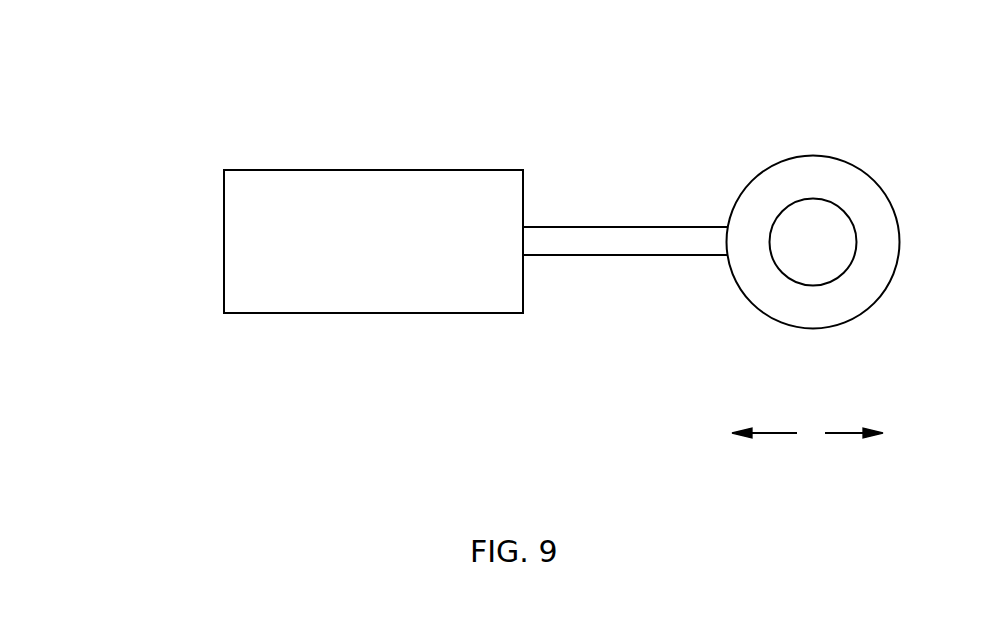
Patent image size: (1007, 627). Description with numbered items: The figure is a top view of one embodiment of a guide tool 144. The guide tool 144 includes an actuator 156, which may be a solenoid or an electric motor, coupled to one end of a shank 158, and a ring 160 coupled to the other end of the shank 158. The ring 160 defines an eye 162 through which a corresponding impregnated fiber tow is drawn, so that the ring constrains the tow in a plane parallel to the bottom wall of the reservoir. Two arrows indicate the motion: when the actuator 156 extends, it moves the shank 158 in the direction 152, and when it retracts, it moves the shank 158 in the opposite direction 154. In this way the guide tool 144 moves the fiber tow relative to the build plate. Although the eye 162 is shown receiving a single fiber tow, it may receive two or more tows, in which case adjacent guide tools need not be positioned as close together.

The guide tool 144 is at (142, 141).
The direction 152 is at (847, 433).
The direction 154 is at (775, 433).
The actuator 156 is at (312, 288).
The shank 158 is at (675, 257).
The ring 160 is at (853, 185).
The eye 162 is at (802, 228).